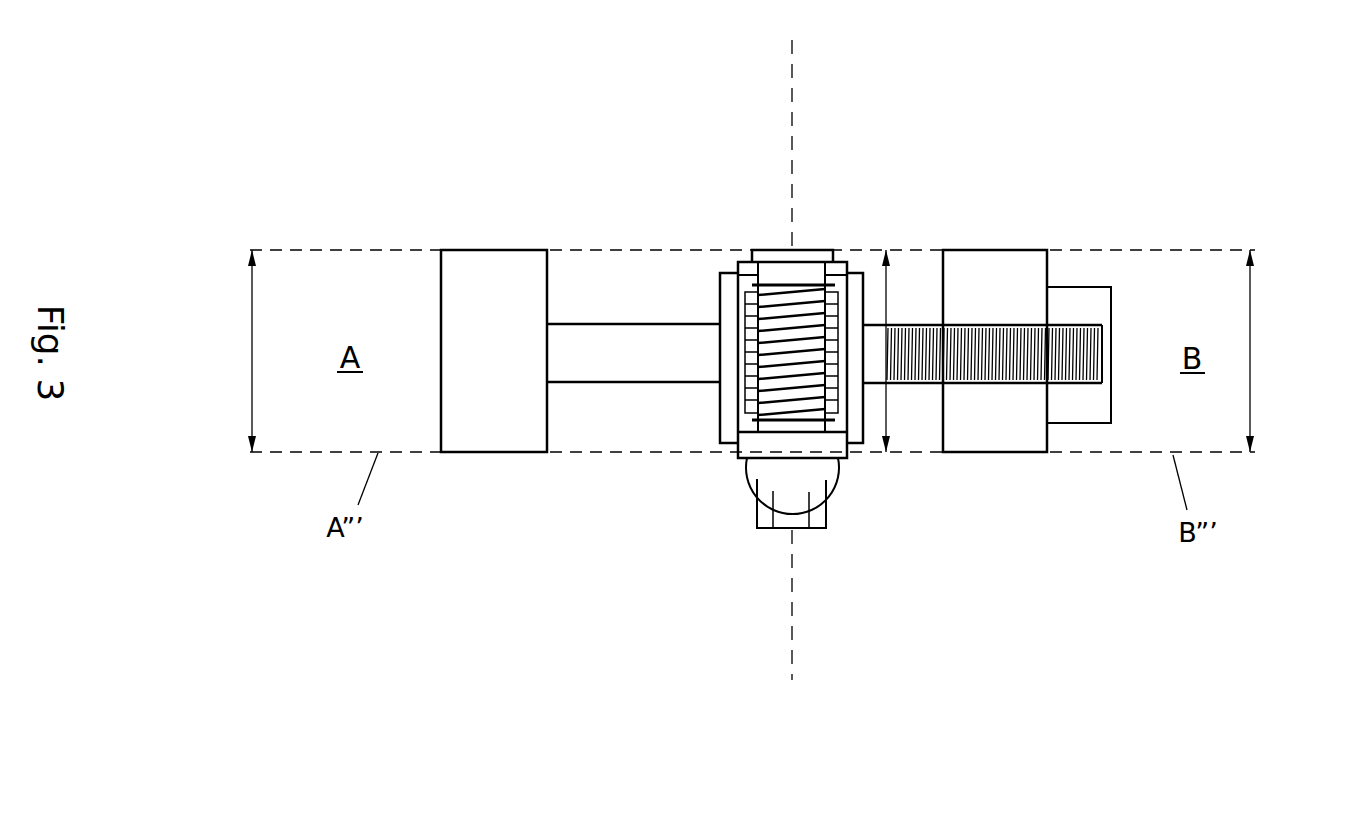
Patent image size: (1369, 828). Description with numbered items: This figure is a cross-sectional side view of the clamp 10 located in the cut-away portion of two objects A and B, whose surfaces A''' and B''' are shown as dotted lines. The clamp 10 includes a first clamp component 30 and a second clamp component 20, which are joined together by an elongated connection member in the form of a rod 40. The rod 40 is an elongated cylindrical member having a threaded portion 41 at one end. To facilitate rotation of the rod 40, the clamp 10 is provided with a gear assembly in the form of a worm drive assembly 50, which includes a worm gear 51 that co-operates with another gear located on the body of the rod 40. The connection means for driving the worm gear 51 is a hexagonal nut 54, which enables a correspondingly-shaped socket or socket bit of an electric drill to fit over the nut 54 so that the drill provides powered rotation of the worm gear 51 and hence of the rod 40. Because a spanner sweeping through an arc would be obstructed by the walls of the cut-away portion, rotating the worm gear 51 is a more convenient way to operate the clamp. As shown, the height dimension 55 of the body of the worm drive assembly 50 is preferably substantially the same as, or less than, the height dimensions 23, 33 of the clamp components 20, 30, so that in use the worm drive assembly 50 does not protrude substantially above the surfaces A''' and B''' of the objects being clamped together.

The clamp 10 is at (631, 495).
The second clamp component 20 is at (465, 260).
The height dimension of clamp component 20 23 is at (252, 333).
The first clamp component 30 is at (1010, 260).
The height dimension of clamp component 30 33 is at (1250, 343).
The rod 40 is at (660, 335).
The threaded portion 41 is at (1078, 330).
The worm drive assembly 50 is at (841, 224).
The worm gear 51 is at (805, 405).
The hexagonal nut 54 is at (763, 517).
The height dimension of the worm drive assembly body 55 is at (886, 297).